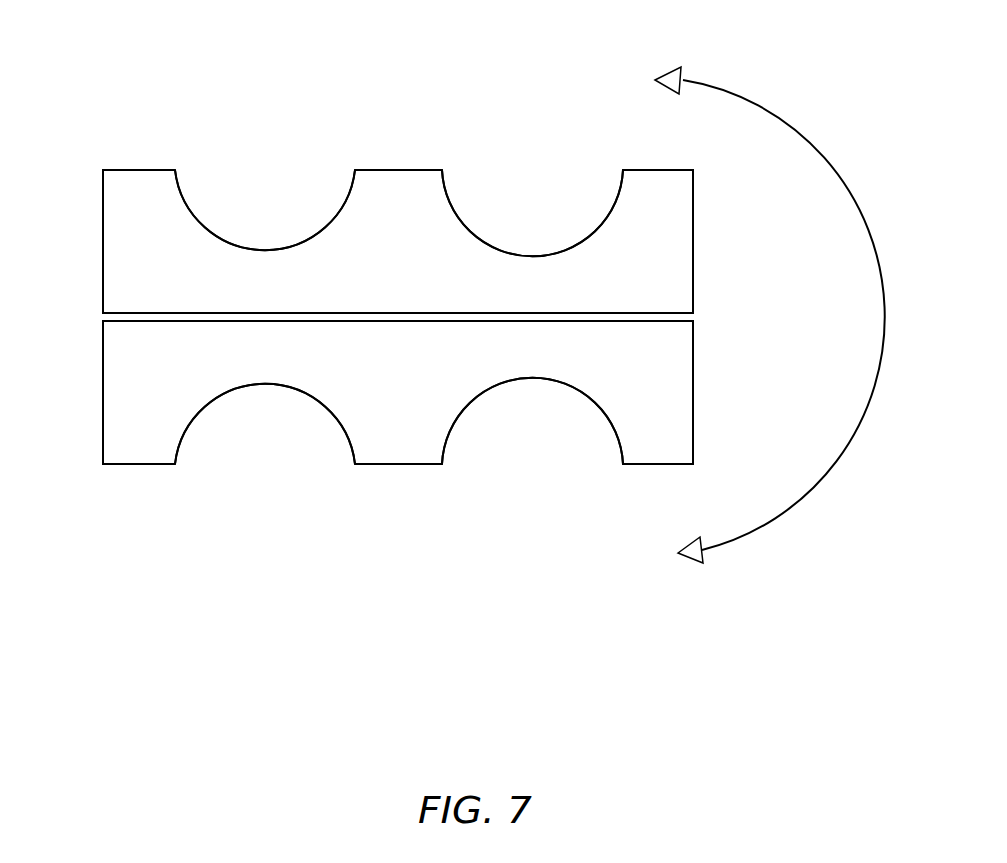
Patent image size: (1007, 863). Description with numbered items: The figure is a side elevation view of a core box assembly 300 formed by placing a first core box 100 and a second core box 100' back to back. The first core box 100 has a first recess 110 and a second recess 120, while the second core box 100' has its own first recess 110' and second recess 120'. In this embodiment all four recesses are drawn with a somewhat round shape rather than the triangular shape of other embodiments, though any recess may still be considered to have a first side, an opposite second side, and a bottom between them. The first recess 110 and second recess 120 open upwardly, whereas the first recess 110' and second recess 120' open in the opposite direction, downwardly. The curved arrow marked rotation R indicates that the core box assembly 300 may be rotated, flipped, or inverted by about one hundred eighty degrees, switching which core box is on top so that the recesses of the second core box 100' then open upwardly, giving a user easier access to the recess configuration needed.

The core box assembly 300 is at (200, 115).
The first core box 100 is at (361, 241).
The second core box 100' is at (364, 392).
The first recess 110 is at (265, 167).
The second recess 120 is at (532, 170).
The first recess 110' is at (265, 468).
The second recess 120' is at (532, 465).
The rotation R is at (883, 348).